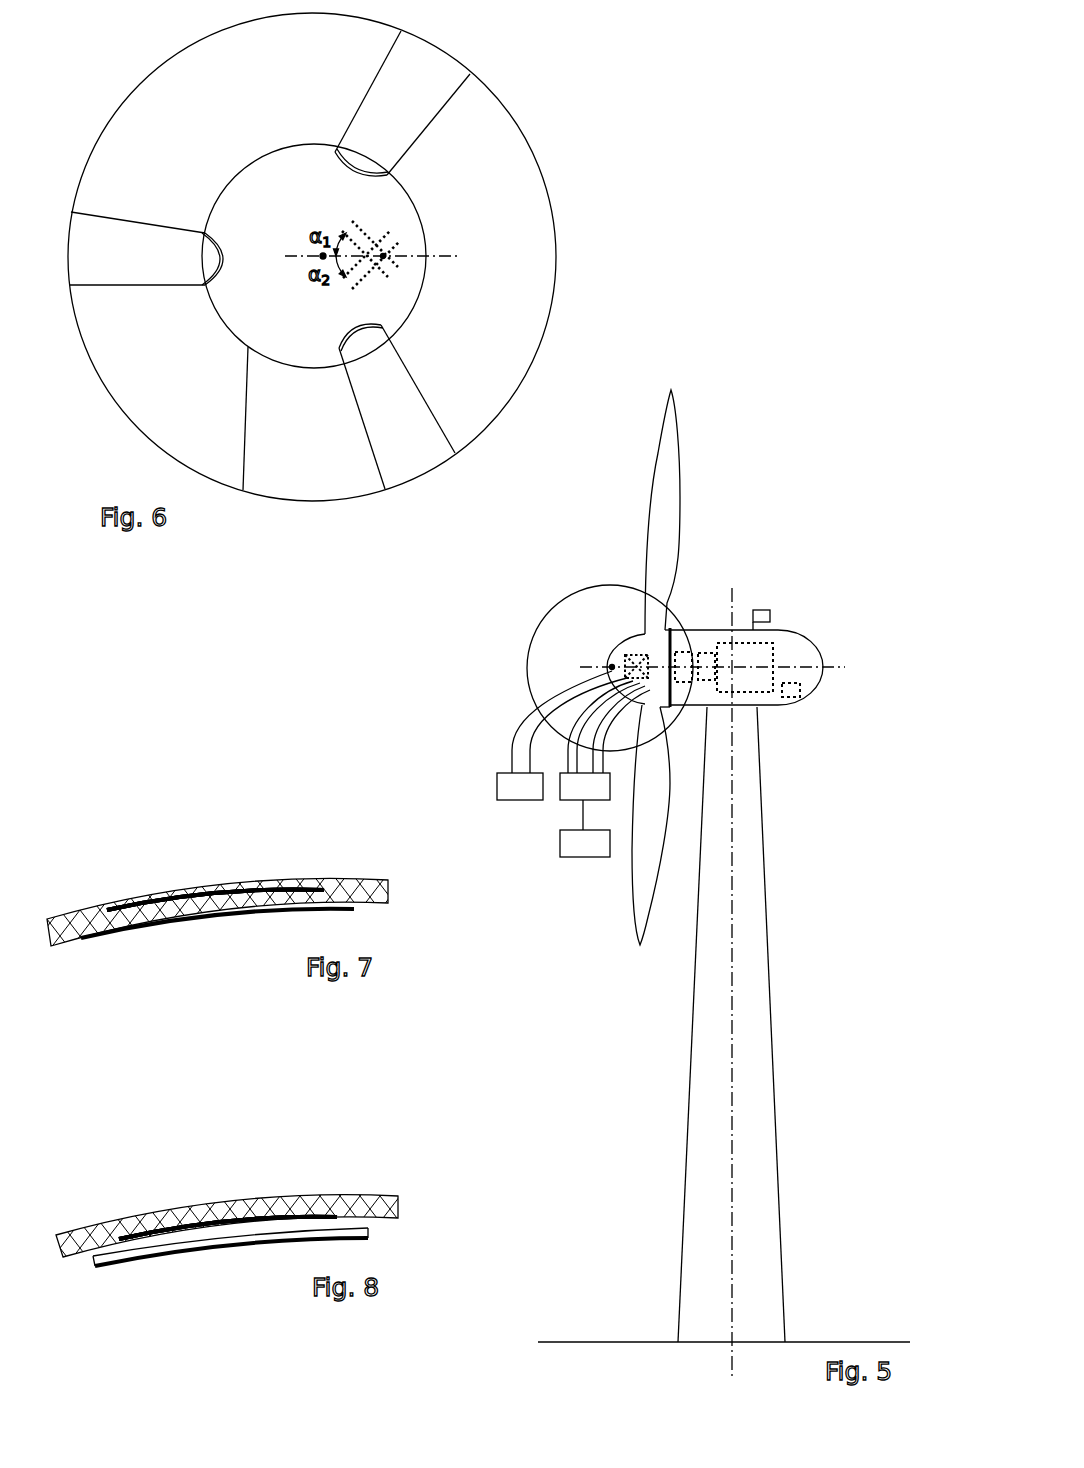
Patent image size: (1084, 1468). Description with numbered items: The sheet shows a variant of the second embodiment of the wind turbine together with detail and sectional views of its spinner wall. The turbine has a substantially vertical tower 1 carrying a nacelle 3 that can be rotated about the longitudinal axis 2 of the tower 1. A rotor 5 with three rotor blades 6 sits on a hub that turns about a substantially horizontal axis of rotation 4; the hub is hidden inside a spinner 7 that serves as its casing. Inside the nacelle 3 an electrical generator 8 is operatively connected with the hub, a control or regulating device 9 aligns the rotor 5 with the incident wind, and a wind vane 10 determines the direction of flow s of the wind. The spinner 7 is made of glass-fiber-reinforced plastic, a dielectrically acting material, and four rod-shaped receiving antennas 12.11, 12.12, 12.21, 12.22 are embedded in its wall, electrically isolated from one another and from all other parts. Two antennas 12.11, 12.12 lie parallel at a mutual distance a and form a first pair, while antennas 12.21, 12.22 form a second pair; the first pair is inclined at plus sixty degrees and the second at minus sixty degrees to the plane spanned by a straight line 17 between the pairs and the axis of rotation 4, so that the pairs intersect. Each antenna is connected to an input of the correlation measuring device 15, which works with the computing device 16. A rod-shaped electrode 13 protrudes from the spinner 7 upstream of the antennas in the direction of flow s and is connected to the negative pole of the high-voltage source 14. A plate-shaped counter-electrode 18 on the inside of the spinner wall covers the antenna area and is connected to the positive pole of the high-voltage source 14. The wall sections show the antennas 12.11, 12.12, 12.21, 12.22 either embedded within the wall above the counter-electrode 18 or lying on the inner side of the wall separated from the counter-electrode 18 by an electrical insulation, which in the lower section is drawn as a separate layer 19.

In FIG. 5, the tower 1 is at (752, 907).
In FIG. 5, the longitudinal axis 2 is at (733, 587).
In FIG. 5, the nacelle 3 is at (797, 647).
In FIG. 5, the axis of rotation 4 is at (845, 667).
In FIG. 5, the rotor 5 is at (690, 544).
In FIG. 6, the rotor blade 6 is at (431, 73).
In FIG. 5, the rotor blade 6 is at (670, 463).
In FIG. 6, the spinner 7 is at (240, 307).
In FIG. 5, the spinner 7 is at (638, 648).
In FIG. 7, the spinner 7 is at (51, 920).
In FIG. 8, the spinner 7 is at (63, 1237).
In FIG. 5, the electrical generator 8 is at (753, 653).
In FIG. 5, the control or regulating device 9 is at (805, 700).
In FIG. 5, the wind vane 10 is at (762, 607).
In FIG. 6, the receiving antenna 12.11 is at (342, 231).
In FIG. 7, the receiving antenna 12.11 is at (208, 886).
In FIG. 8, the receiving antenna 12.11 is at (217, 1225).
In FIG. 6, the receiving antenna 12.12 is at (353, 221).
In FIG. 7, the receiving antenna 12.12 is at (215, 863).
In FIG. 8, the receiving antenna 12.12 is at (228, 1186).
In FIG. 6, the receiving antenna 12.21 is at (343, 278).
In FIG. 7, the receiving antenna 12.21 is at (215, 863).
In FIG. 8, the receiving antenna 12.21 is at (228, 1186).
In FIG. 6, the receiving antenna 12.22 is at (352, 289).
In FIG. 7, the receiving antenna 12.22 is at (223, 863).
In FIG. 8, the receiving antenna 12.22 is at (234, 1186).
In FIG. 6, the electrode 13 is at (321, 255).
In FIG. 5, the electrode 13 is at (610, 666).
In FIG. 5, the high-voltage source 14 is at (497, 784).
In FIG. 5, the correlation measuring device 15 is at (568, 797).
In FIG. 5, the computing device 16 is at (583, 853).
In FIG. 6, the straight line 17 is at (454, 255).
In FIG. 5, the counter-electrode 18 is at (630, 653).
In FIG. 7, the counter-electrode 18 is at (166, 920).
In FIG. 8, the counter-electrode 18 is at (181, 1249).
In FIG. 8, the insulation layer 19 is at (95, 1259).
In FIG. 6, the mutual distance a is at (366, 239).
In FIG. 5, the direction of flow s is at (437, 677).